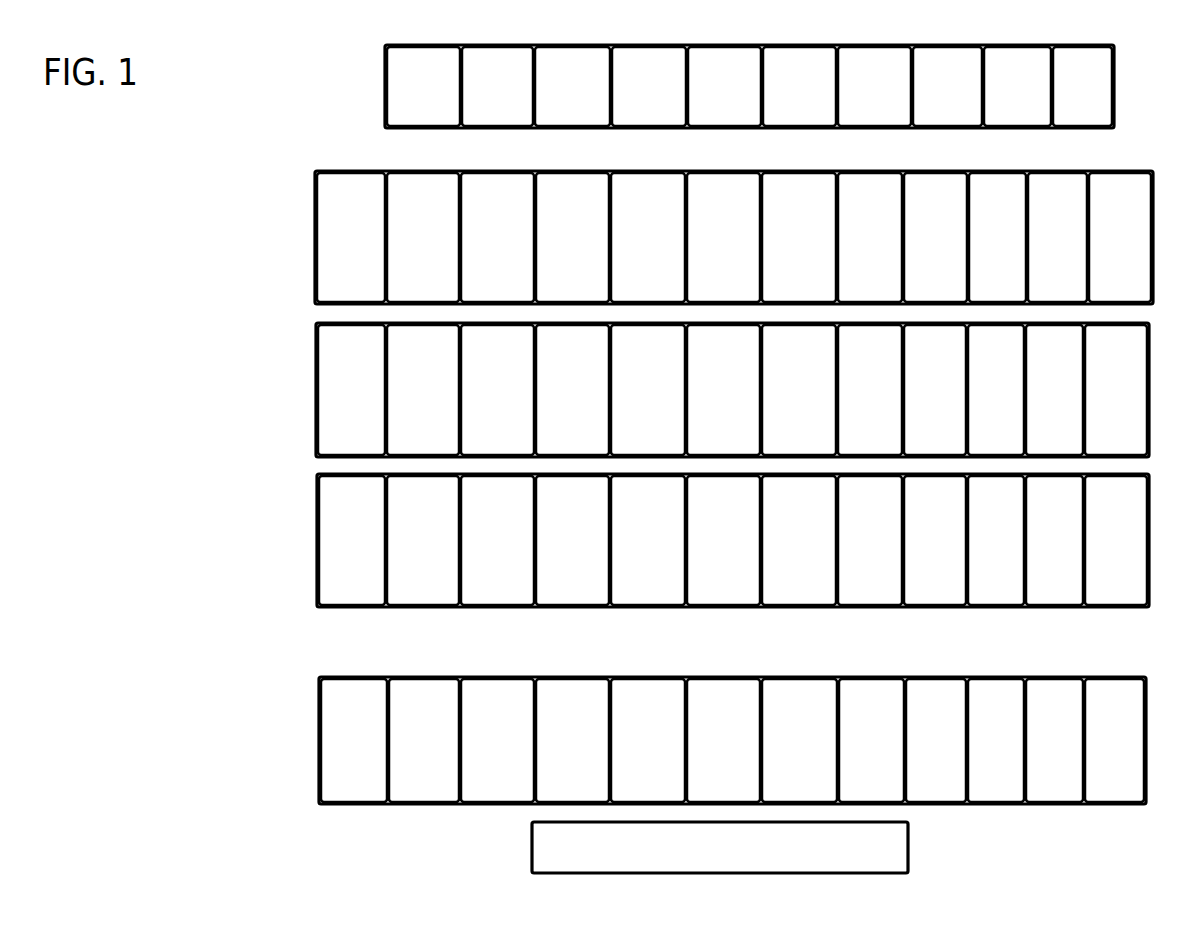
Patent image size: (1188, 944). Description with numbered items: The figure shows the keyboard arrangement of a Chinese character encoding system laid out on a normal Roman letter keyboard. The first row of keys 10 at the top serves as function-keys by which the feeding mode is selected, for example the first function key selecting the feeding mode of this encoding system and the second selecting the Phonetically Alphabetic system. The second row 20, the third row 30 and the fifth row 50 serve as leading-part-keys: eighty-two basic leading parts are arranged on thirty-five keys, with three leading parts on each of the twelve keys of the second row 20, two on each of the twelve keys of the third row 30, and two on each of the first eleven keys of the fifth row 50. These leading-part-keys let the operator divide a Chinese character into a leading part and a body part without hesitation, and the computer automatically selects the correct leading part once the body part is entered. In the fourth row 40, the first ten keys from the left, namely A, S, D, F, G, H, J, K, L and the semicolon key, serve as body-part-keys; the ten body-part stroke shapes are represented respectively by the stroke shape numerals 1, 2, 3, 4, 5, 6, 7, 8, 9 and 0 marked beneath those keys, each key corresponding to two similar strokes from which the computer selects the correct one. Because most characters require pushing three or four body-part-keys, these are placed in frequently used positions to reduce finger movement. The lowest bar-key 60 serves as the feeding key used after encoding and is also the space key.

The function key row 10 is at (366, 86).
The second row 20 is at (297, 214).
The third row 30 is at (304, 362).
The fourth row 40 is at (307, 515).
The fifth row 50 is at (302, 712).
The bar-key 60 is at (504, 838).
The stroke shape 1 is at (356, 618).
The stroke shape 2 is at (436, 617).
The stroke shape 3 is at (504, 617).
The stroke shape 4 is at (555, 618).
The stroke shape 5 is at (635, 617).
The stroke shape 6 is at (713, 616).
The stroke shape 7 is at (791, 617).
The stroke shape 8 is at (876, 616).
The stroke shape 9 is at (932, 616).
The stroke shape 0 is at (997, 617).